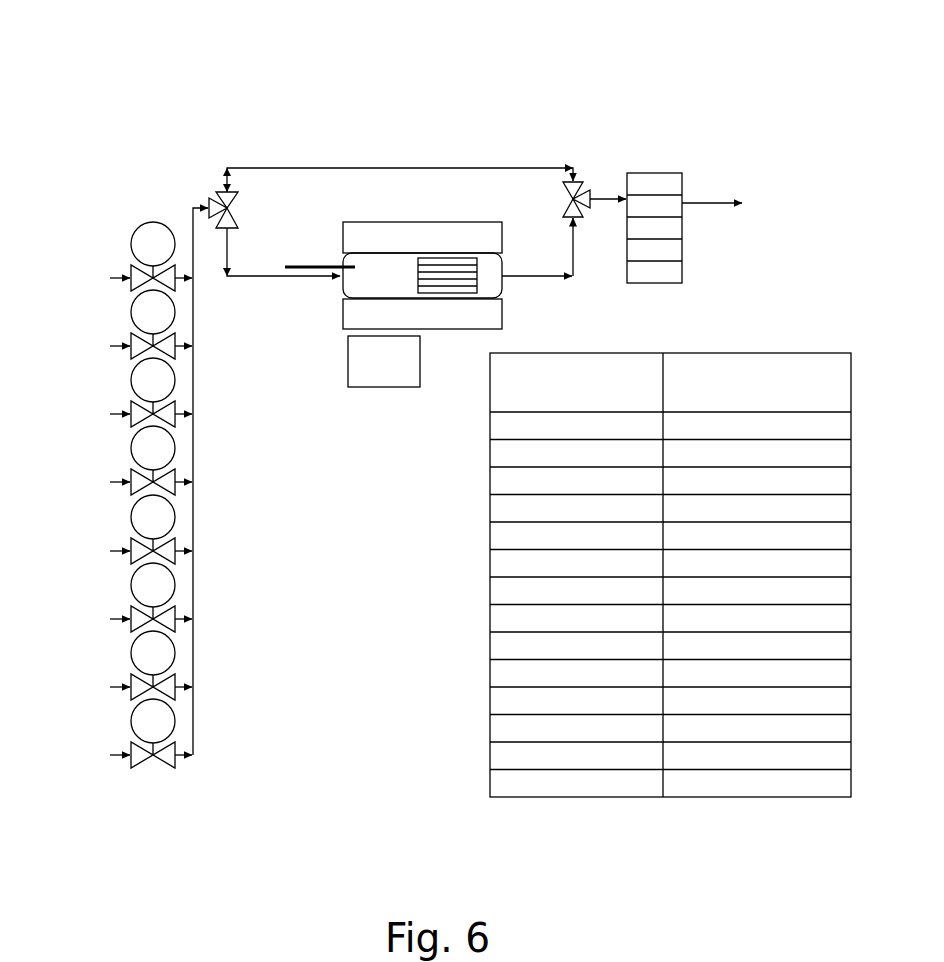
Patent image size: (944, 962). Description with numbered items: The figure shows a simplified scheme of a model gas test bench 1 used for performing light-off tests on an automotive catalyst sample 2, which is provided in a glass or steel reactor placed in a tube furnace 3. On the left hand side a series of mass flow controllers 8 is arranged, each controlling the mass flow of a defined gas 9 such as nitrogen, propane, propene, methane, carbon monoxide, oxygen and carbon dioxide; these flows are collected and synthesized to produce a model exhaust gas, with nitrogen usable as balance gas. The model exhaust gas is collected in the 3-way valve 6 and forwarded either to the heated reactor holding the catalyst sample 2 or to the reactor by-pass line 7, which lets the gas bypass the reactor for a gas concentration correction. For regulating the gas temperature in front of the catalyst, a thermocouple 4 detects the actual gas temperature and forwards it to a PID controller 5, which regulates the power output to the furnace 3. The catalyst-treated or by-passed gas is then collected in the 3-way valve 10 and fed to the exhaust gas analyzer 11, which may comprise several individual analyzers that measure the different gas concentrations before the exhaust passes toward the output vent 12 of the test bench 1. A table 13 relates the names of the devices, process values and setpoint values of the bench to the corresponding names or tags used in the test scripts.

The model gas test bench 1 is at (138, 88).
The automotive catalyst sample 2 is at (477, 276).
The tube furnace 3 is at (341, 313).
The thermocouple 4 is at (320, 264).
The PID controller 5 is at (383, 387).
The 3-way valve 6 is at (215, 198).
The by-pass line 7 is at (370, 167).
The mass flow controller 8 is at (153, 221).
The defined gas 9 is at (77, 240).
The 3-way valve 10 is at (583, 190).
The exhaust gas analyzer 11 is at (682, 268).
The output vent 12 is at (740, 200).
The table 13 is at (488, 588).